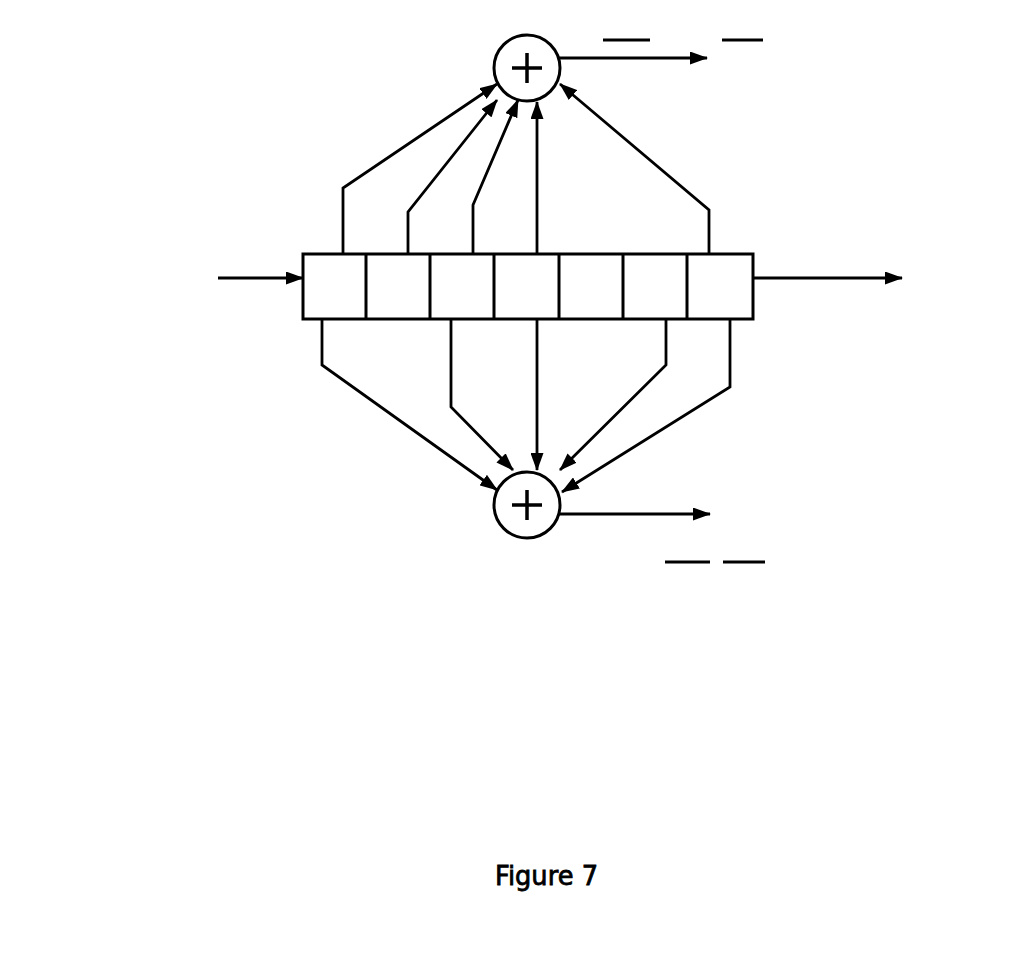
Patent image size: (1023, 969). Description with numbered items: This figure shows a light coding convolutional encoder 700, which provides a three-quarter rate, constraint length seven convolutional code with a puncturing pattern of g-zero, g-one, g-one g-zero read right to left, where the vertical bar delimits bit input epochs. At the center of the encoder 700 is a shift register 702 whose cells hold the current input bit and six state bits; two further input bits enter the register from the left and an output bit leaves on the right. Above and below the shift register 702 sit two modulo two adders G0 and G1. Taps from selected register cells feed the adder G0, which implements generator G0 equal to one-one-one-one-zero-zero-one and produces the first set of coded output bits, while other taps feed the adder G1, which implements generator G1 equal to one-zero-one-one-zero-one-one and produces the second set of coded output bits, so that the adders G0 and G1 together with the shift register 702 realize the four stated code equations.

The convolutional encoder 700 is at (323, 732).
The shift register 702 is at (303, 320).
The modulo two adder G0 is at (505, 68).
The modulo two adder G1 is at (506, 505).